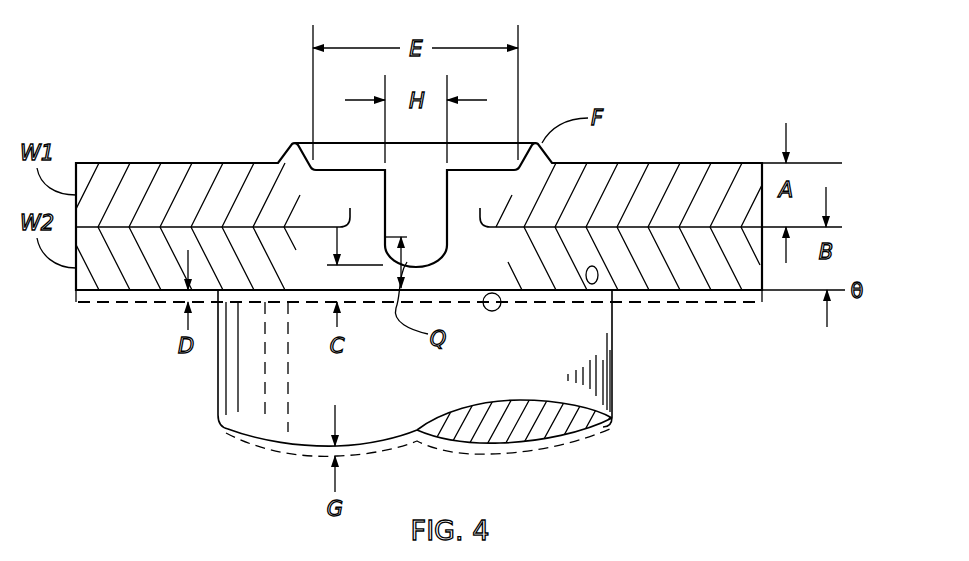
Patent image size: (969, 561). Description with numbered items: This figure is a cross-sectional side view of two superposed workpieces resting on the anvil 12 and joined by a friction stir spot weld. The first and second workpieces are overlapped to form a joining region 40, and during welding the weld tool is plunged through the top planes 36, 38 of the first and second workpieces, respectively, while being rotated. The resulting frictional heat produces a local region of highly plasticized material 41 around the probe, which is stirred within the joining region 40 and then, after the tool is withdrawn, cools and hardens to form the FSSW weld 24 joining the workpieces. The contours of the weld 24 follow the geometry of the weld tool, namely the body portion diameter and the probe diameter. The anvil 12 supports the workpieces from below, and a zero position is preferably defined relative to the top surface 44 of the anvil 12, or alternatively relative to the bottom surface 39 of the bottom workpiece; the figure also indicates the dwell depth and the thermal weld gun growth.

The anvil 12 is at (613, 337).
The FSSW weld 24 is at (492, 152).
The top plane of first workpiece 36 is at (186, 163).
The top plane of second workpiece 38 is at (165, 227).
The bottom surface of bottom workpiece 39 is at (488, 293).
The joining region 40 is at (306, 86).
The plasticized material 41 is at (452, 200).
The top surface of anvil 44 is at (590, 278).